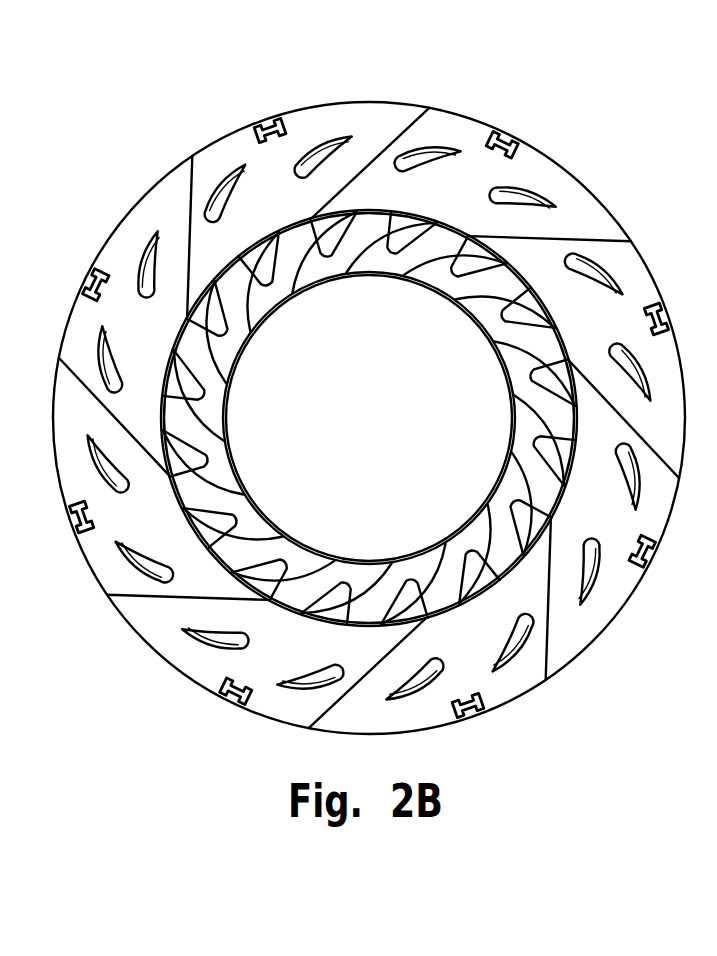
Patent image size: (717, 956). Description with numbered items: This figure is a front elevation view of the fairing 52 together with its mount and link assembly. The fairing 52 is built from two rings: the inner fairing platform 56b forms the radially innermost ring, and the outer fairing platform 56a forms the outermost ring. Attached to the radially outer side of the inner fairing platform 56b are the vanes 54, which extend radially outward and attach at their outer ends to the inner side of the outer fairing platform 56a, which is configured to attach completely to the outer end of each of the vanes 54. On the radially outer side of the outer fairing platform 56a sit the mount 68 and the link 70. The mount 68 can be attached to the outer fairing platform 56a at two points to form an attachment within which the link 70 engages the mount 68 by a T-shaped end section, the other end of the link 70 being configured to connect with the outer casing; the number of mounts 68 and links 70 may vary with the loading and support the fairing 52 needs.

The fairing 52 is at (643, 144).
The vanes 54 is at (478, 262).
The outer fairing platform 56a is at (368, 118).
The inner fairing platform 56b is at (303, 271).
The mount 68 is at (514, 135).
The link 70 is at (497, 136).